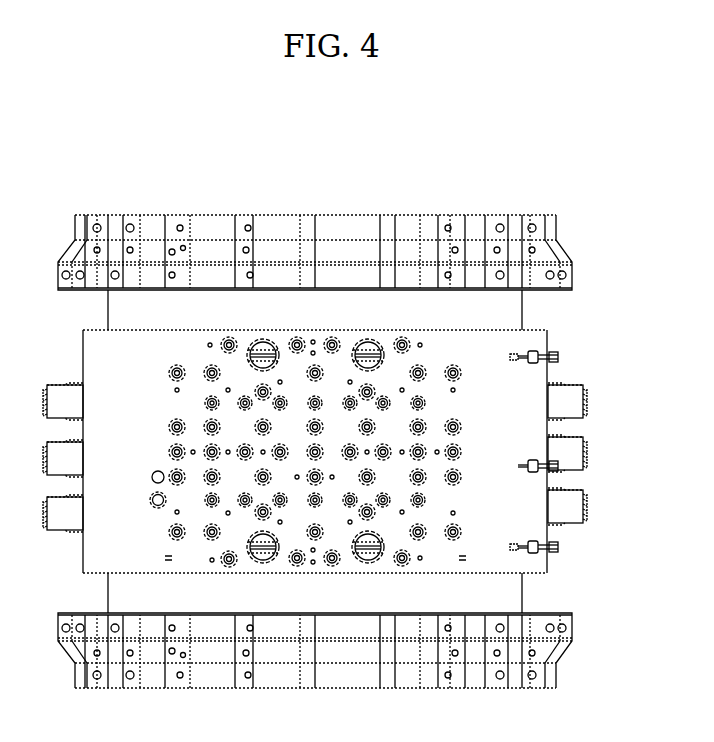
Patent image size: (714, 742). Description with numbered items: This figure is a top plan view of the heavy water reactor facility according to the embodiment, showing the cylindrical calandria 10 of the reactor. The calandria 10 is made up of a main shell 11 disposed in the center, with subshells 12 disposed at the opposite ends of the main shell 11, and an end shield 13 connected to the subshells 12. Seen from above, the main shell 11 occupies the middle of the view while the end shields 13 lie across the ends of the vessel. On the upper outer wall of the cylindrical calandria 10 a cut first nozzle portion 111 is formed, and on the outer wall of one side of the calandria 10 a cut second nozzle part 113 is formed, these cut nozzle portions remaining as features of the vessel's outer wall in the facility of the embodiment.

The calandria 10 is at (636, 250).
The main shell 11 is at (572, 457).
The subshell 12 is at (328, 451).
The end shield 13 is at (568, 244).
The cut first nozzle portion 111 is at (212, 534).
The cut second nozzle part 113 is at (545, 553).